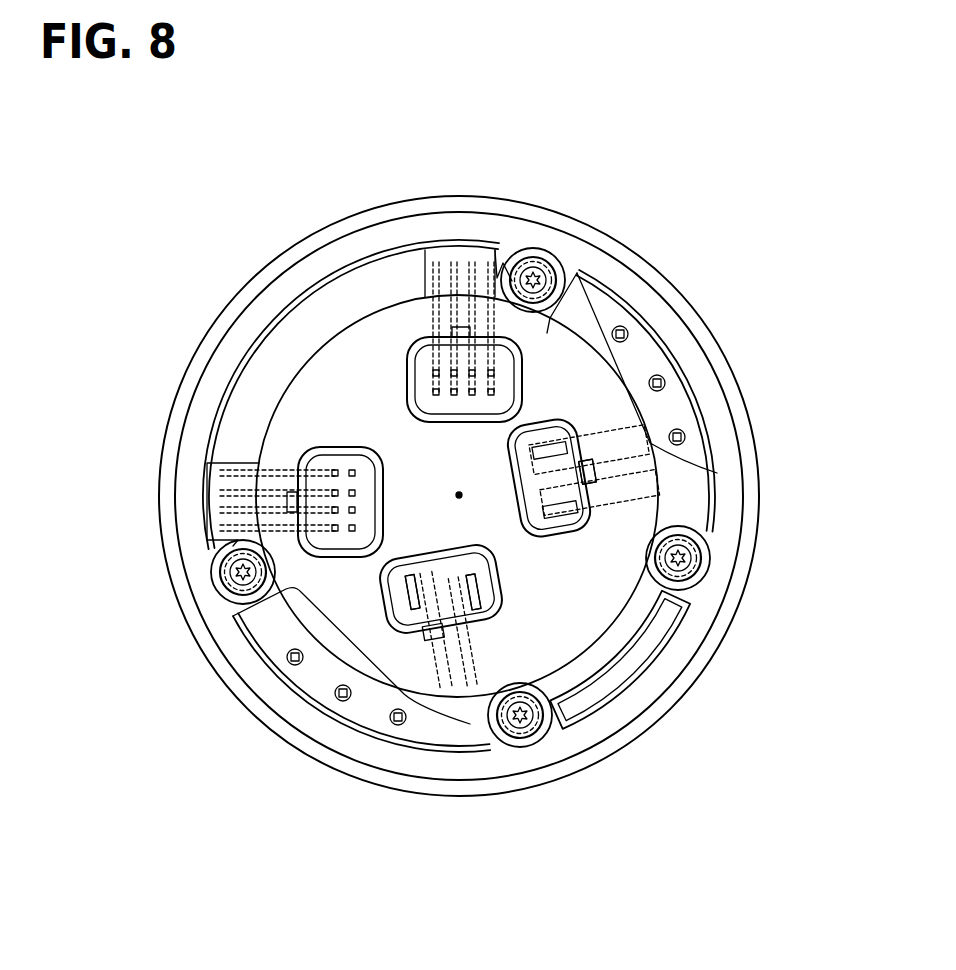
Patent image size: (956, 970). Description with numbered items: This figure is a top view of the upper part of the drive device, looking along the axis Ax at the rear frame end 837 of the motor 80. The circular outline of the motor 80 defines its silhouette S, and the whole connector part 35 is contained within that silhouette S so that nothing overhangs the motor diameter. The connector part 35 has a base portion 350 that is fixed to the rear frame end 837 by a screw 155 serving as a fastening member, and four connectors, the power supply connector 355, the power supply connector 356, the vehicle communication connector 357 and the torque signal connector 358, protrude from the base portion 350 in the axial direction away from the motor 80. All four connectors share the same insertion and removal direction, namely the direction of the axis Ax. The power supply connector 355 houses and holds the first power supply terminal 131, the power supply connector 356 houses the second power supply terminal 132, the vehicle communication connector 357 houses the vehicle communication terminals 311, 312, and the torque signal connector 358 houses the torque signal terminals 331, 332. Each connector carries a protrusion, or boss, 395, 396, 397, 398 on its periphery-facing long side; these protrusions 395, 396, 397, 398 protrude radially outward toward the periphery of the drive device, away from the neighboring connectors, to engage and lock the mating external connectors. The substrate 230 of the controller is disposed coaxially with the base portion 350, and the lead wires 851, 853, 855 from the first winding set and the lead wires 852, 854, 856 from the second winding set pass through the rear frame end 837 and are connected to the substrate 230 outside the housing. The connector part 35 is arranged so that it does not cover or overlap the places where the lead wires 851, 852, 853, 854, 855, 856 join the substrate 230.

The connector part 35 is at (350, 325).
The motor 80 is at (685, 702).
The first power supply terminal 131 is at (655, 475).
The second power supply terminal 132 is at (407, 690).
The screw 155 is at (538, 265).
The substrate 230 is at (628, 365).
The vehicle communication terminal 311 is at (352, 528).
The vehicle communication terminal 312 is at (308, 452).
The torque signal terminal 331 is at (492, 372).
The torque signal terminal 332 is at (436, 390).
The base portion 350 is at (327, 372).
The power supply connector 355 is at (660, 532).
The power supply connector 356 is at (562, 718).
The vehicle communication connector 357 is at (335, 473).
The torque signal connector 358 is at (552, 312).
The protrusion 395 is at (604, 466).
The protrusion 396 is at (432, 642).
The protrusion 397 is at (285, 503).
The protrusion 398 is at (465, 300).
The rear frame end 837 is at (335, 245).
The lead wire 851 is at (624, 330).
The lead wire 852 is at (661, 380).
The lead wire 853 is at (683, 435).
The lead wire 854 is at (292, 662).
The lead wire 855 is at (340, 699).
The lead wire 856 is at (396, 724).
The axis Ax is at (462, 498).
The silhouette S is at (717, 660).